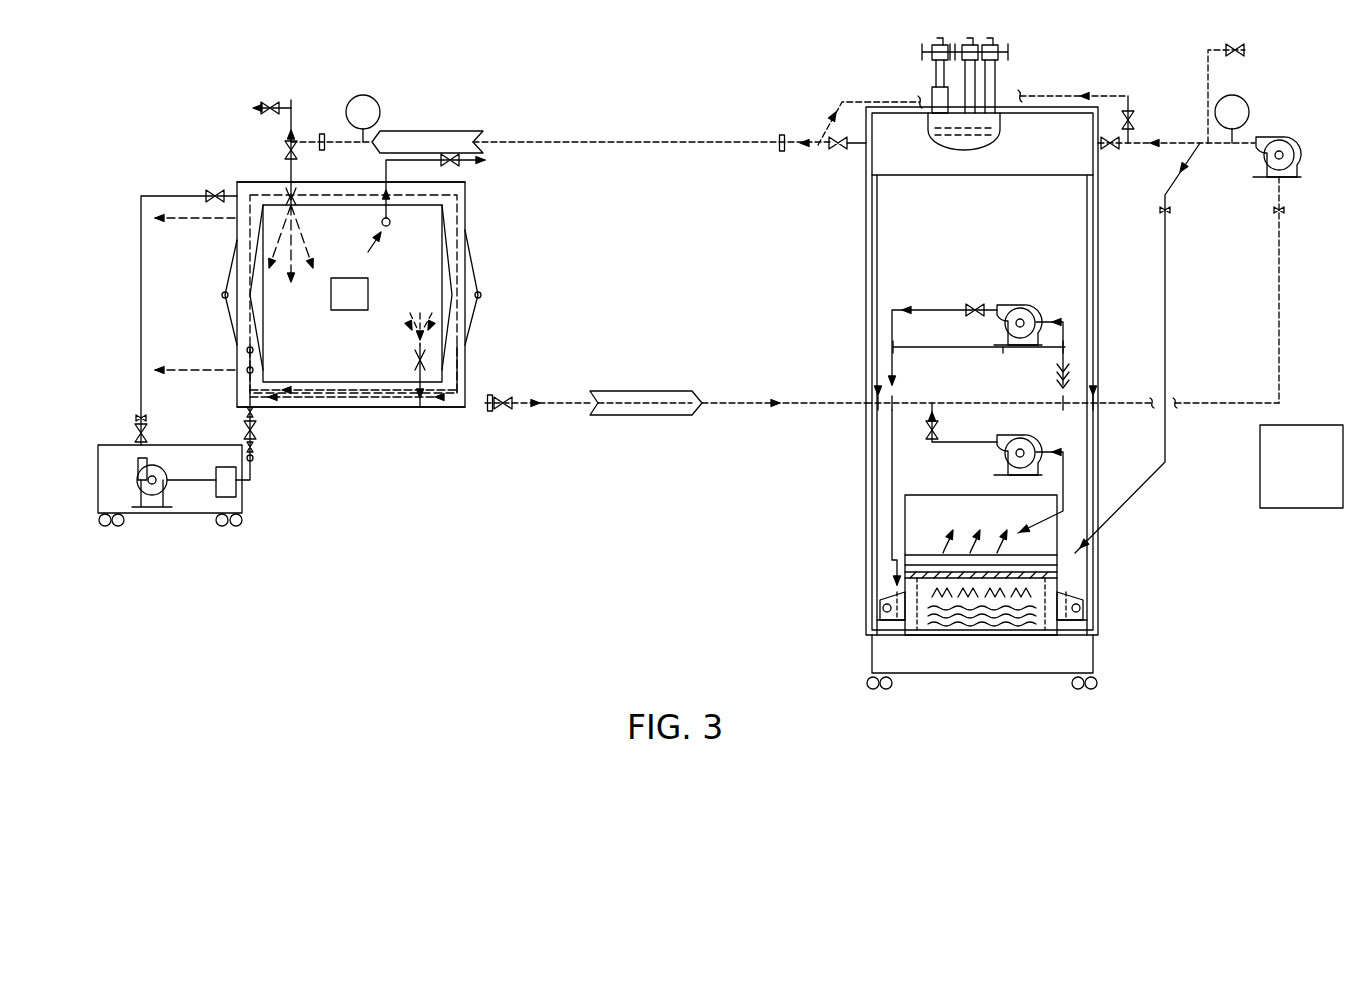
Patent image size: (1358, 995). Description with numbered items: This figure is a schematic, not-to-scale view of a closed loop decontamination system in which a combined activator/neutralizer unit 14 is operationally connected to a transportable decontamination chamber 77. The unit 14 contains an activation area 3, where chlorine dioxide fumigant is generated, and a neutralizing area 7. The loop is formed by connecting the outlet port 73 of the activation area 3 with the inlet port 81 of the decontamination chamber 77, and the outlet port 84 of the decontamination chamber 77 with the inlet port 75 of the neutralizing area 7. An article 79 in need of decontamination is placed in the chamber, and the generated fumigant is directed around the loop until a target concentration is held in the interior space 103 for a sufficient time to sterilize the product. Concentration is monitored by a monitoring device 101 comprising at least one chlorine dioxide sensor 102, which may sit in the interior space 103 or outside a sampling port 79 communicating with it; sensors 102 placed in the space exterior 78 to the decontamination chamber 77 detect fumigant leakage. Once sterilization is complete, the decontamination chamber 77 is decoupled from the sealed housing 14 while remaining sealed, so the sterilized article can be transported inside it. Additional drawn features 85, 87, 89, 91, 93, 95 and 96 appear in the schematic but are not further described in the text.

The activation area 3 is at (1000, 127).
The neutralizing area 7 is at (905, 478).
The combined activator/neutralizer unit 14 is at (866, 236).
The outlet port 73 is at (850, 148).
The inlet port 75 is at (860, 405).
The decontamination chamber 77 is at (318, 408).
The space exterior 78 is at (530, 302).
The sampling port 79 is at (482, 166).
The inlet port 81 is at (291, 185).
The outlet port 84 is at (422, 408).
The system 85 is at (567, 555).
The inner wall 87 is at (447, 288).
The door 89 is at (470, 232).
The port 91 is at (454, 366).
The pump 93 is at (158, 462).
The door 95 is at (222, 295).
The wheels 96 is at (104, 527).
The monitoring device 101 is at (352, 280).
The ClO2 sensor 102 is at (389, 228).
The interior space 103 is at (315, 340).